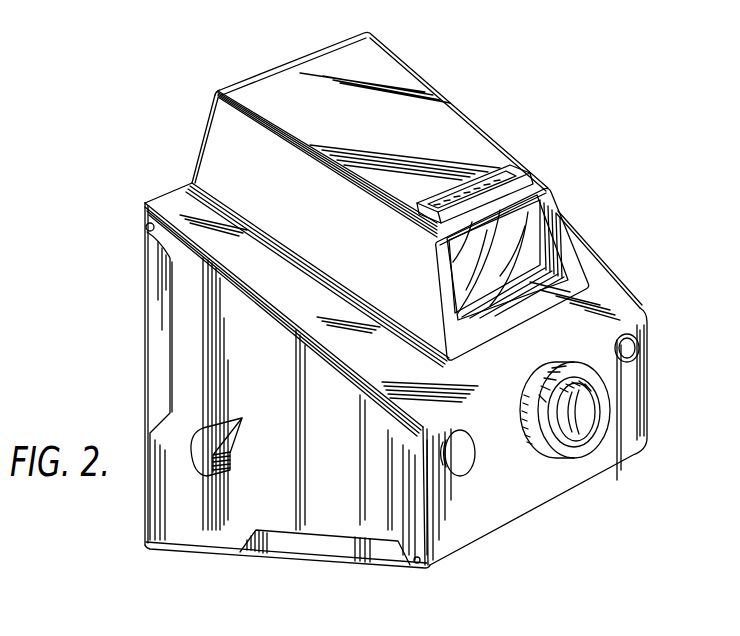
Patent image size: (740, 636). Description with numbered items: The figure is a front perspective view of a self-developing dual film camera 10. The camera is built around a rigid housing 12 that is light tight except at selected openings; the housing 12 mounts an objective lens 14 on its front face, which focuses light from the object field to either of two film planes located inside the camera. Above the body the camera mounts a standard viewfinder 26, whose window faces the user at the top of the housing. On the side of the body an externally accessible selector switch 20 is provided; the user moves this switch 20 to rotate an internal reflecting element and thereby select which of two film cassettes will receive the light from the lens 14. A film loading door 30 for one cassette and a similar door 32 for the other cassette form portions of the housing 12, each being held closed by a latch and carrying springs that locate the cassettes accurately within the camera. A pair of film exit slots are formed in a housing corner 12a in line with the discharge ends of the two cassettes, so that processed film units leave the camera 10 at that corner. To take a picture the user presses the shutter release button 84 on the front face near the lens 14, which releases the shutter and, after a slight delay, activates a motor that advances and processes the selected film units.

The self-developing camera 10 is at (148, 163).
The housing 12 is at (431, 84).
The housing corner 12a is at (147, 545).
The objective lens 14 is at (578, 408).
The selector switch 20 is at (229, 456).
The viewfinder 26 is at (523, 248).
The film loading door 30 is at (145, 353).
The door 32 is at (305, 558).
The shutter release button 84 is at (463, 455).